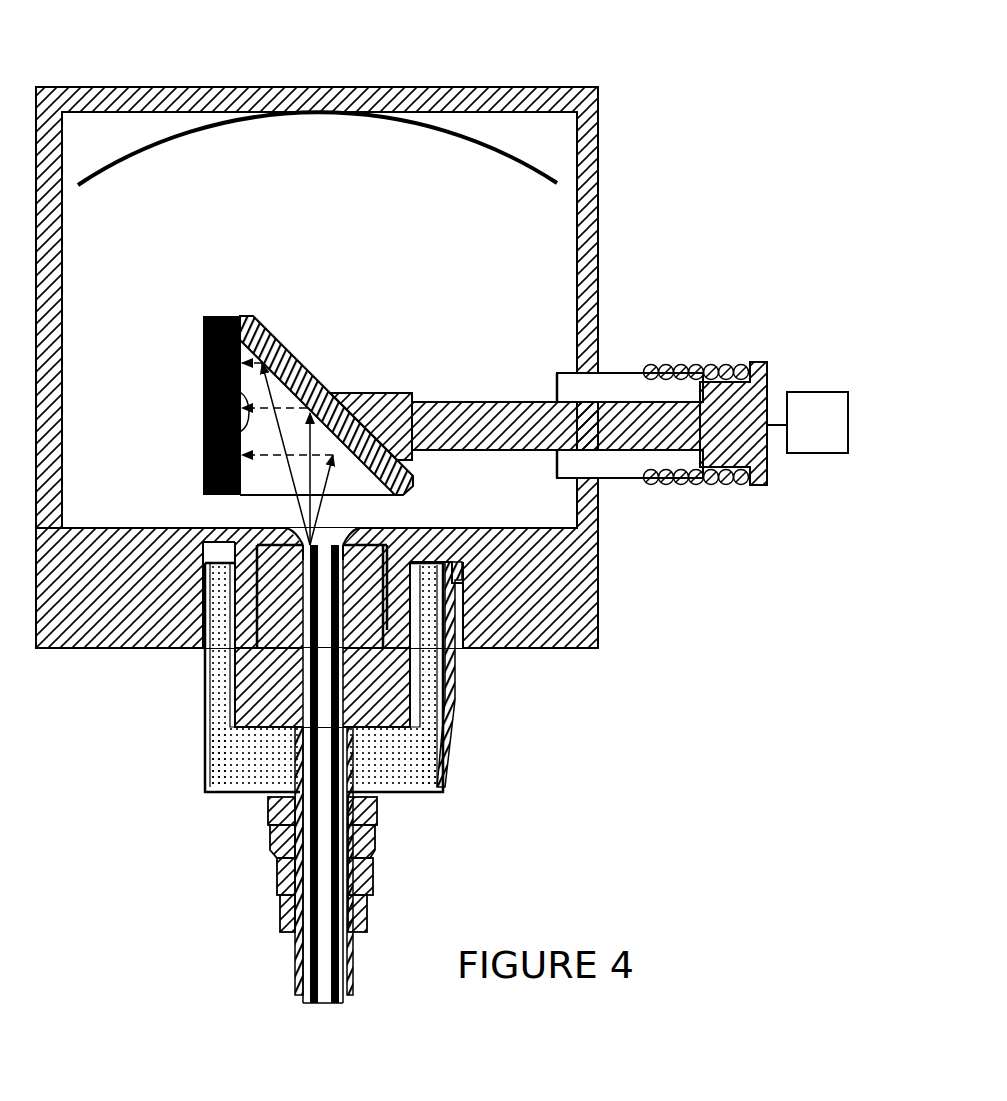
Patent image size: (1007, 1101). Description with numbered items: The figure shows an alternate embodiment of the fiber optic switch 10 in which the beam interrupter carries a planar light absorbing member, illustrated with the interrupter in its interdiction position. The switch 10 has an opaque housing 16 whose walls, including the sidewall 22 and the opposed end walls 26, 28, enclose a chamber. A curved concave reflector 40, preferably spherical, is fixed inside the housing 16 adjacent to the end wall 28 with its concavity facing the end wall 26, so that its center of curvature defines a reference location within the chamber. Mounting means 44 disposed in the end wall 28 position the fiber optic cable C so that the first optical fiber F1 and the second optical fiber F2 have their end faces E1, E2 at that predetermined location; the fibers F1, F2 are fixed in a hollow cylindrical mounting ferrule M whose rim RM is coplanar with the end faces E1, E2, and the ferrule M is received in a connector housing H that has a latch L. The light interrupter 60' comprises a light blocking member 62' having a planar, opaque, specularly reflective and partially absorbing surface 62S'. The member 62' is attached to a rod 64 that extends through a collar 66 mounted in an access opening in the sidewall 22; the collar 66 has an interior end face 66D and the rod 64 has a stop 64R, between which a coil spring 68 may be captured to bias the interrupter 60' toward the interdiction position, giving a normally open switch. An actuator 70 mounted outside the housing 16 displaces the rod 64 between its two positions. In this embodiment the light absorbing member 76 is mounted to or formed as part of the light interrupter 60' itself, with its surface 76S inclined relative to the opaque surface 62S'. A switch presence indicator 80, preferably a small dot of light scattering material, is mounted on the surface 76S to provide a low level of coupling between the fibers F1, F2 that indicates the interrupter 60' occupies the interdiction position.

The switch 10 is at (700, 68).
The housing 16 is at (598, 93).
The sidewall 22 is at (600, 246).
The end wall 26 is at (572, 651).
The end wall 28 is at (410, 87).
The curved concave reflector 40 is at (520, 170).
The mounting means 44 is at (132, 775).
The light interrupter 60' is at (544, 399).
The light blocking member 62' is at (379, 407).
The surface 62S' is at (326, 405).
The rod 64 is at (613, 452).
The stop 64R is at (415, 455).
The collar 66 is at (615, 372).
The interior end face 66D is at (557, 392).
The coil spring 68 is at (700, 485).
The actuator 70 is at (807, 422).
The light absorbing member 76 is at (205, 316).
The surface 76S is at (268, 337).
The switch presence indicator 80 is at (203, 452).
The end face E1 is at (303, 542).
The end face E2 is at (333, 542).
The rim RM is at (290, 532).
The mounting ferrule M is at (212, 682).
The latch L is at (455, 683).
The connector housing H is at (220, 793).
The fiber optic cable C is at (296, 950).
The first optical fiber F1 is at (305, 1005).
The second optical fiber F2 is at (342, 1005).